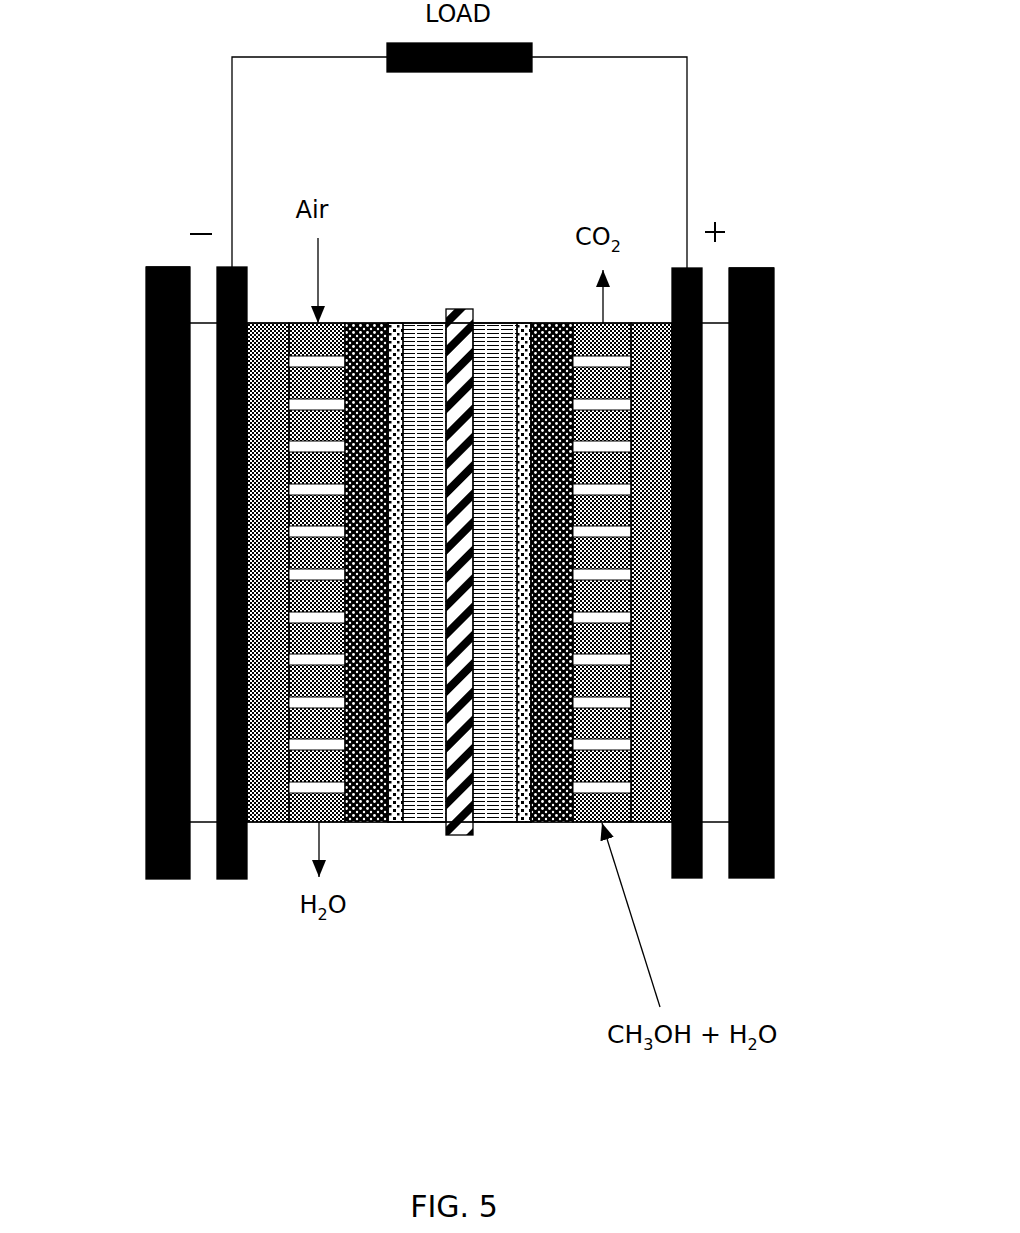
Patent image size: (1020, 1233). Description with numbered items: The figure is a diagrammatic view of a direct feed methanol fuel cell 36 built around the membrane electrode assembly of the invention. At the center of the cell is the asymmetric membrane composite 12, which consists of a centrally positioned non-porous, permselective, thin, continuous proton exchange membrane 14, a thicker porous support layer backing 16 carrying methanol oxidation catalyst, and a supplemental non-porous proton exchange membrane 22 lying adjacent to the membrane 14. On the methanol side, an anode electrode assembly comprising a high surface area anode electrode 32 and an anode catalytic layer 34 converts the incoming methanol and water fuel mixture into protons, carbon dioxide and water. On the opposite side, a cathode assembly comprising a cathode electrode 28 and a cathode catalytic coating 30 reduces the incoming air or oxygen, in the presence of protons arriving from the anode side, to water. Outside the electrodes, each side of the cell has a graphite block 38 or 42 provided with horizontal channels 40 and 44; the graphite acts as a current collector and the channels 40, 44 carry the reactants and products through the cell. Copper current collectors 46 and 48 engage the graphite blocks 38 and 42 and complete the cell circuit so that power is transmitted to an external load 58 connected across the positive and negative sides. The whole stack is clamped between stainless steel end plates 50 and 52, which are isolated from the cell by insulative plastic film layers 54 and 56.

The asymmetric membrane composite 12 is at (490, 265).
The proton exchange membrane 14 is at (461, 835).
The porous support layer backing 16 is at (503, 822).
The supplemental non-porous proton exchange membrane 22 is at (430, 323).
The cathode electrode 28 is at (362, 822).
The cathode catalytic coating 30 is at (400, 323).
The anode electrode 32 is at (561, 822).
The anode catalytic layer 34 is at (522, 323).
The direct feed methanol fuel cell 36 is at (788, 155).
The graphite block 38 is at (617, 323).
The horizontal channels 40 is at (588, 782).
The graphite block 42 is at (276, 822).
The horizontal channels 44 is at (317, 365).
The copper current collector 46 is at (690, 878).
The copper current collector 48 is at (233, 879).
The stainless steel end plate 50 is at (146, 267).
The stainless steel end plate 52 is at (775, 785).
The insulative plastic film layer 54 is at (717, 805).
The insulative plastic film layer 56 is at (204, 822).
The load 58 is at (445, 72).